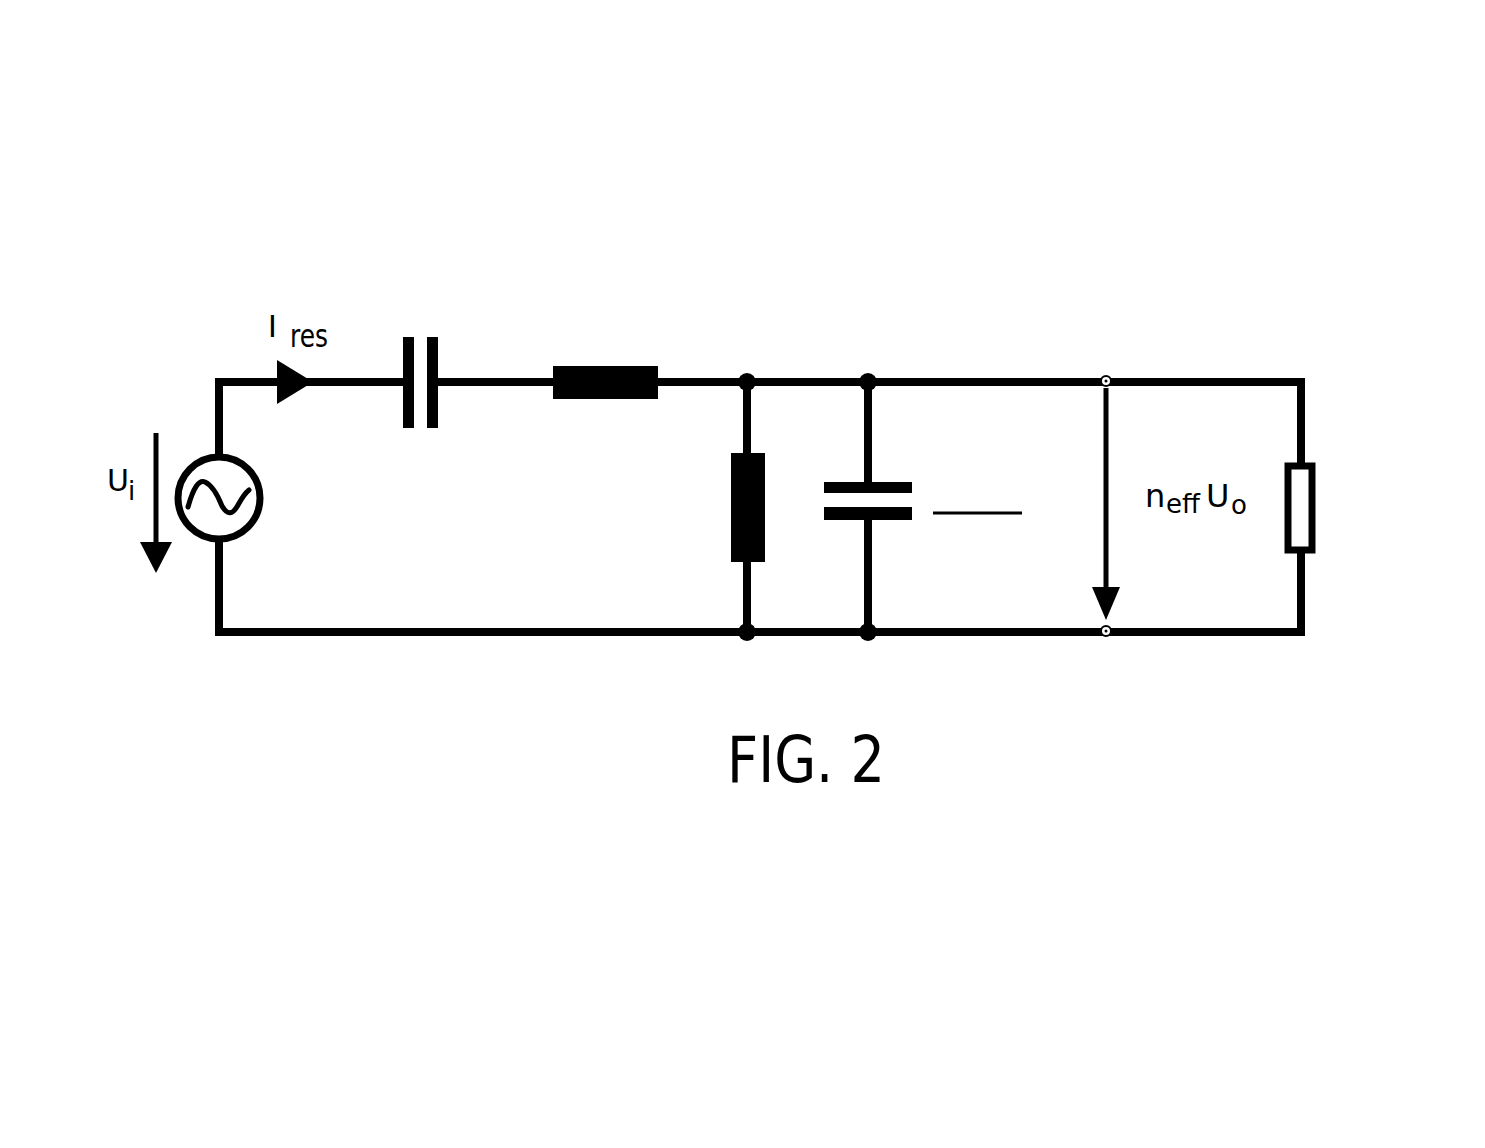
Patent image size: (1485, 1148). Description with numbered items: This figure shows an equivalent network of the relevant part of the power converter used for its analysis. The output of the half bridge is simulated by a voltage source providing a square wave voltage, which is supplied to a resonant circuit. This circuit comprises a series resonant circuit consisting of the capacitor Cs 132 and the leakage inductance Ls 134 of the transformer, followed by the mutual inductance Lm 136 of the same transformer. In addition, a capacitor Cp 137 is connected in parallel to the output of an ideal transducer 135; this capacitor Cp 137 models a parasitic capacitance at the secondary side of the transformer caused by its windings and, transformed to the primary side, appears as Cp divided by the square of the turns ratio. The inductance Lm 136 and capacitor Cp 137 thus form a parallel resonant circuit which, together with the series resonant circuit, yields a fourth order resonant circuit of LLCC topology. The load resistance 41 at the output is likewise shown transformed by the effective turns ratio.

The capacitor Cs 132 is at (403, 360).
The inductance Ls 134 is at (577, 366).
The inductance Lm 136 is at (732, 483).
The ideal transducer 135 is at (805, 378).
The capacitor Cp 137 is at (897, 482).
The load (LED) resistance RAC 41 is at (1315, 482).